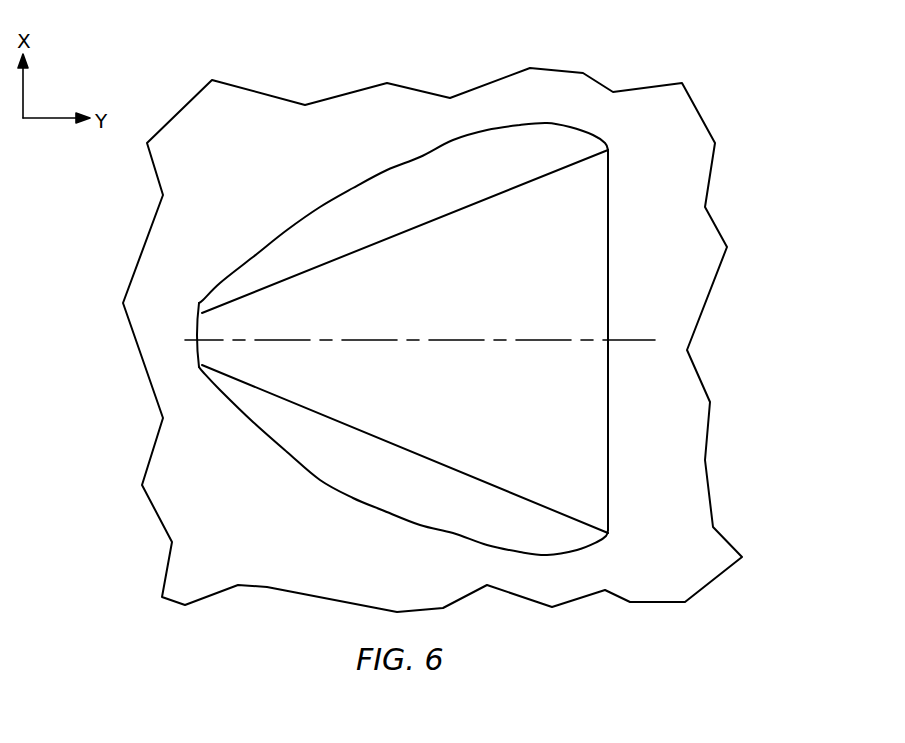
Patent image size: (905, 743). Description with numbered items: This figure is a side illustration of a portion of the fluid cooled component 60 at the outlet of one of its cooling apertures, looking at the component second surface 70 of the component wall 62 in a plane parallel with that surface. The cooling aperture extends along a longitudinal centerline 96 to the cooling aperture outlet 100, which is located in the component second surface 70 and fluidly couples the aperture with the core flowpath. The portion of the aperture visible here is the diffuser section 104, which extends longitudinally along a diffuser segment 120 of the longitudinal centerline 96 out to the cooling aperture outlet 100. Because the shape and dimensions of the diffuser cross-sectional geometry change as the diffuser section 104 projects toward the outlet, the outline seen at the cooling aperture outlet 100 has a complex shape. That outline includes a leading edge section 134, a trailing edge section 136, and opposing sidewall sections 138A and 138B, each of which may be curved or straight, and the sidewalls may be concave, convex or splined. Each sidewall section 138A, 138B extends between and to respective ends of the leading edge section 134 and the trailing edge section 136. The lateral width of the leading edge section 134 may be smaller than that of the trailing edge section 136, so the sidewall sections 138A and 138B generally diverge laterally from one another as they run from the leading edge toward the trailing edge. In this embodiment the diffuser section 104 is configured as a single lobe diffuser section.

The fluid cooled component 60 is at (454, 312).
The component wall 62 is at (454, 312).
The component second surface 70 is at (680, 576).
The longitudinal centerline 96 is at (645, 352).
The cooling aperture outlet 100 is at (386, 337).
The diffuser section 104 is at (590, 258).
The diffuser segment 120 is at (460, 342).
The leading edge section 134 is at (197, 353).
The trailing edge section 136 is at (608, 445).
The sidewall section 138A is at (382, 510).
The sidewall section 138B is at (377, 173).